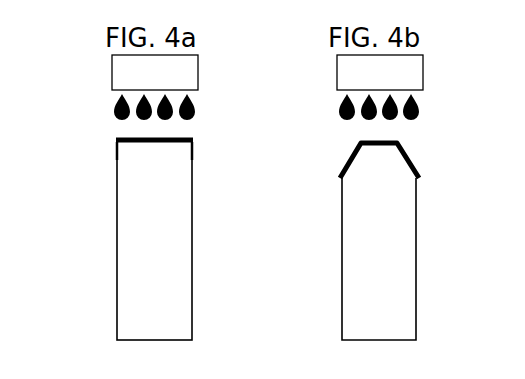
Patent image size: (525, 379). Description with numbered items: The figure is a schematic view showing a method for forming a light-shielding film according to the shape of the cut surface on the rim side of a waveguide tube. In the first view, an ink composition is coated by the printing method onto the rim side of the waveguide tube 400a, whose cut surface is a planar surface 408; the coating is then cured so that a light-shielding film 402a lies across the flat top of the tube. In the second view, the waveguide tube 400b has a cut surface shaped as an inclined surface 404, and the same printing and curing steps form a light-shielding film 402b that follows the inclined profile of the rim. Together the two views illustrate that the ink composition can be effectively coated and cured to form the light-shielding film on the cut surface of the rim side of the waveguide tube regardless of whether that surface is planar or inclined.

In FIG. 4A, the waveguide tube 400a is at (193, 293).
In FIG. 4A, the light-shielding film 402a is at (194, 141).
In FIG. 4A, the planar surface 408 is at (150, 159).
In FIG. 4B, the waveguide tube 400b is at (417, 294).
In FIG. 4B, the light-shielding film 402b is at (408, 157).
In FIG. 4B, the inclined surface 404 is at (385, 159).